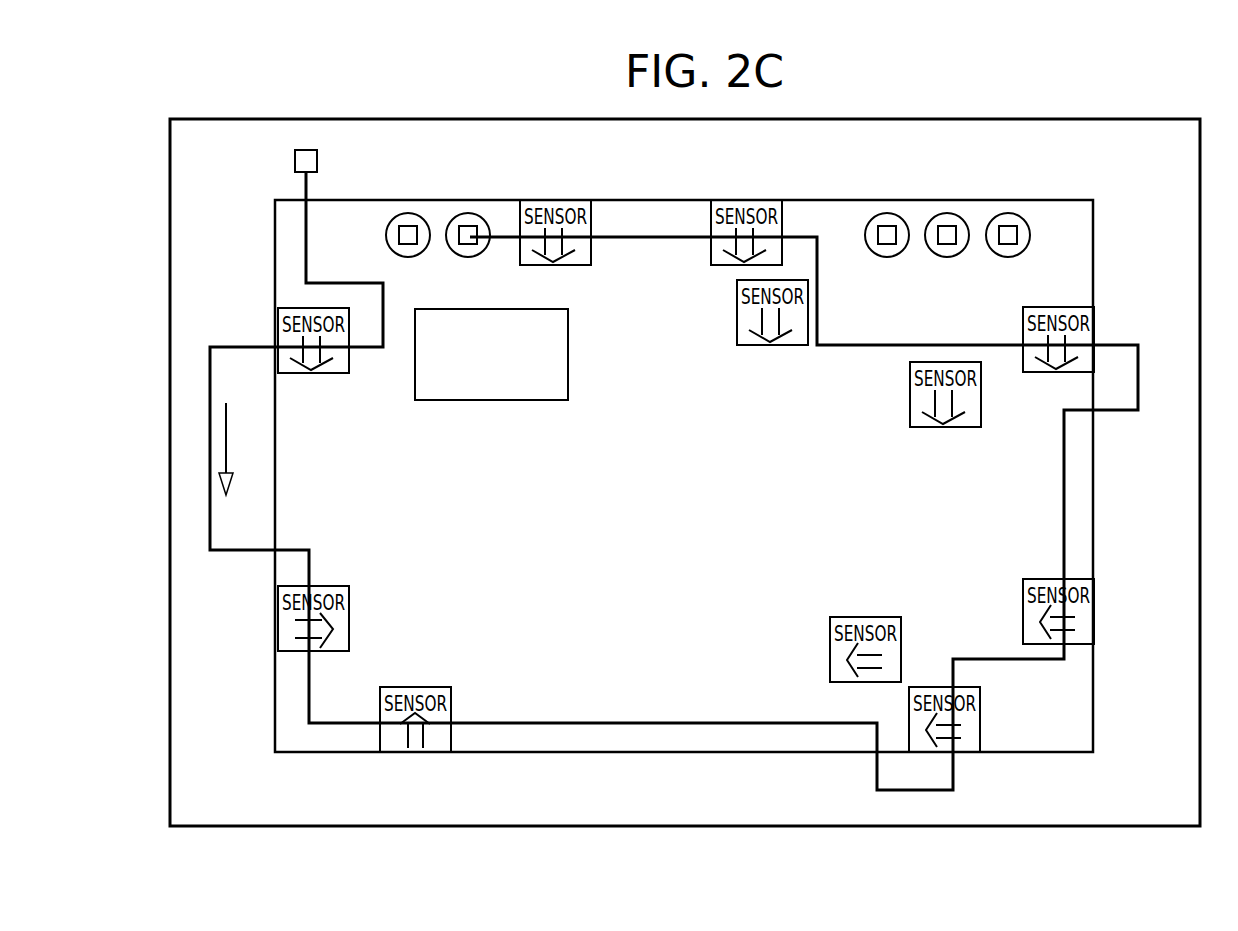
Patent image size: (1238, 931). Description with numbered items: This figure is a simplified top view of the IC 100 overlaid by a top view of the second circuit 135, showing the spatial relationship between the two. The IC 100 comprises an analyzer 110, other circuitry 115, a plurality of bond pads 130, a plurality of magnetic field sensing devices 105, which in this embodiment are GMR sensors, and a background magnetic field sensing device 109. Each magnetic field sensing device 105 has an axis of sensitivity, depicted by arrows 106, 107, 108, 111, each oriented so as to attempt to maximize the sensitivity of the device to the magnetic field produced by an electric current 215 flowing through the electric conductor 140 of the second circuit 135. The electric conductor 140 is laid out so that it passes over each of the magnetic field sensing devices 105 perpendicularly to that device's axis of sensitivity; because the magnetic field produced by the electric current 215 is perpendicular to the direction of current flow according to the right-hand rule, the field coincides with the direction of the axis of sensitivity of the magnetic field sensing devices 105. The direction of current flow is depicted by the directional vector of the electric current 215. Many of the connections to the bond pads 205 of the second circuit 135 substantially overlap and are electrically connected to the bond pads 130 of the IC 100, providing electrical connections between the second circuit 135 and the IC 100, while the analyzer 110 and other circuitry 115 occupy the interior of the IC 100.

The second circuit 135 is at (156, 216).
The IC 100 is at (264, 283).
The electric conductor 140 is at (210, 387).
The electric current 215 is at (226, 460).
The bond pads 205 is at (468, 222).
The bond pads 130 is at (386, 235).
The magnetic field sensing devices 105 is at (348, 368).
The arrow 106 is at (311, 372).
The background magnetic field sensing device 109 is at (737, 314).
The arrow 108 is at (1040, 622).
The arrow 107 is at (415, 735).
The arrow 111 is at (310, 628).
The analyzer 110 is at (568, 358).
The other circuitry 115 is at (735, 558).